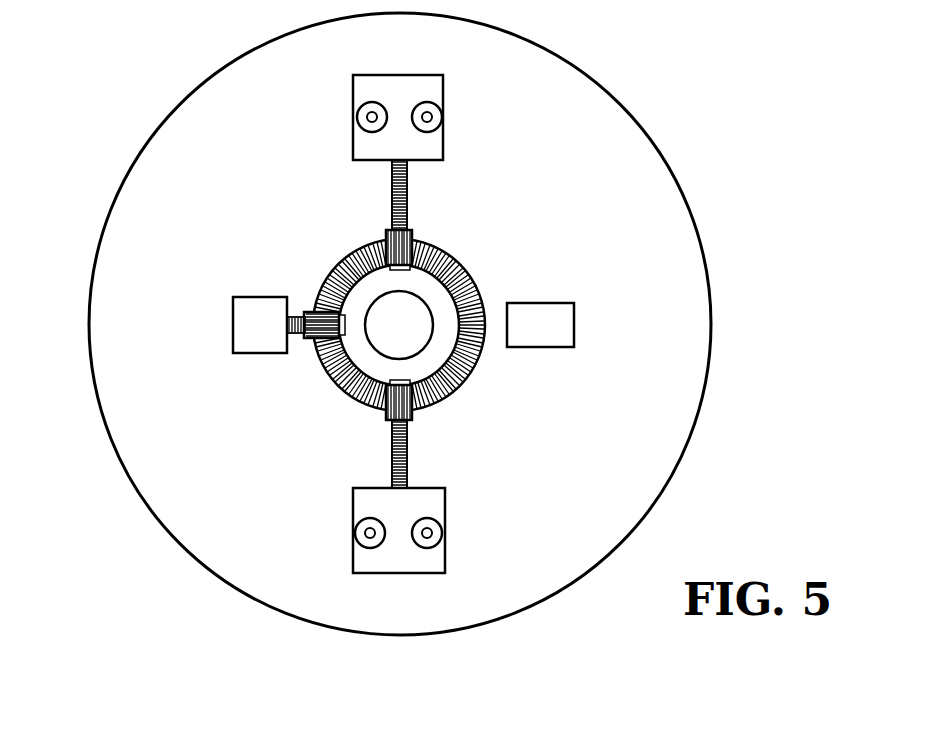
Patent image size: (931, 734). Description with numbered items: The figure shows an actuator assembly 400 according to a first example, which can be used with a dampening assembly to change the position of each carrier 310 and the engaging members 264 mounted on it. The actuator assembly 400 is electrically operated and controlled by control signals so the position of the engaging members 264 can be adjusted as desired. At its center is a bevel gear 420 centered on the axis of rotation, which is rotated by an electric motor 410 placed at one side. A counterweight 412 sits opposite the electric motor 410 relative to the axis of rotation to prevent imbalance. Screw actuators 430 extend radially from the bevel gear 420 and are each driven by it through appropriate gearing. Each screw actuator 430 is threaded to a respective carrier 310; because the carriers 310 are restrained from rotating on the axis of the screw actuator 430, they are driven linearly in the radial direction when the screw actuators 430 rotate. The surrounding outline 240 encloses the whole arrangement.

The housing 240 is at (138, 114).
The carrier 310 is at (447, 98).
The engaging members 264 is at (370, 118).
The screw actuators 430 is at (407, 173).
The bevel gear 420 is at (462, 262).
The actuator assembly 400 is at (373, 324).
The electric motor 410 is at (248, 298).
The counterweight 412 is at (532, 308).